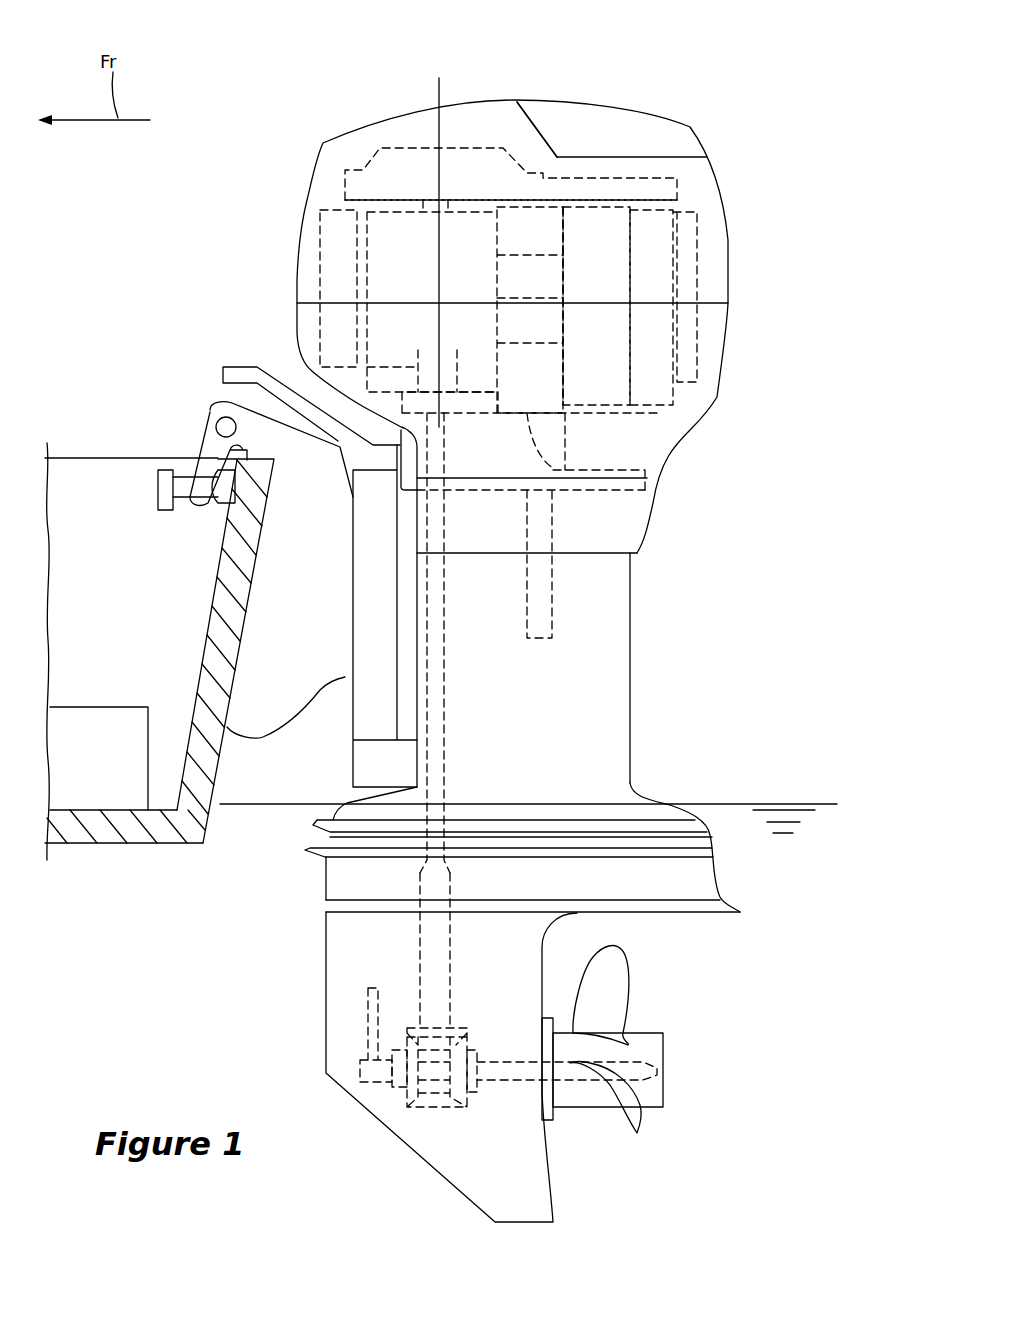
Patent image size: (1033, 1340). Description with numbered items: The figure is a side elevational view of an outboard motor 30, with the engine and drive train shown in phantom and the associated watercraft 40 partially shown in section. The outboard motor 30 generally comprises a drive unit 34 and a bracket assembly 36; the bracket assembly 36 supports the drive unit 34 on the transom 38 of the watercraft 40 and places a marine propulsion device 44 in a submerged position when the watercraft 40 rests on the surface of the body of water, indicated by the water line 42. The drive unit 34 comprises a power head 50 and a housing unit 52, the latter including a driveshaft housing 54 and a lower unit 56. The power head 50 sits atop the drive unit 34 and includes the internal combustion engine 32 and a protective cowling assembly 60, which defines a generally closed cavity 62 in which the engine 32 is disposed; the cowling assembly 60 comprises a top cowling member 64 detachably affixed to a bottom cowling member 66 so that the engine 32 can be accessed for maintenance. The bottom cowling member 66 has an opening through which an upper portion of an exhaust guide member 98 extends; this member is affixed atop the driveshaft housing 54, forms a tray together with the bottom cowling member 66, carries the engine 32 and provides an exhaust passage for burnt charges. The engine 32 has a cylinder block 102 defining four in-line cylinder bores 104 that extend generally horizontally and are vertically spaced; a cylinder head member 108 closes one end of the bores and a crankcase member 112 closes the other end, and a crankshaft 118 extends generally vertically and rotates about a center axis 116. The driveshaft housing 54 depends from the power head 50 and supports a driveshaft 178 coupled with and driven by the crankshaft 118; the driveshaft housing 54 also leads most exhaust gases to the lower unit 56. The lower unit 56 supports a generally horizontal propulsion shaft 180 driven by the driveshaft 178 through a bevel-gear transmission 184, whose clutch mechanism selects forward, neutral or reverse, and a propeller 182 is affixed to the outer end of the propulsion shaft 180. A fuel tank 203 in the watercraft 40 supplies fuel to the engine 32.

The outboard motor 30 is at (527, 614).
The internal combustion engine 32 is at (508, 450).
The drive unit 34 is at (595, 727).
The bracket assembly 36 is at (213, 651).
The transom 38 is at (210, 637).
The watercraft 40 is at (132, 706).
The water line 42 is at (528, 781).
The marine propulsion device 44 is at (546, 1067).
The power head 50 is at (507, 450).
The housing unit 52 is at (568, 605).
The driveshaft housing 54 is at (522, 826).
The lower unit 56 is at (415, 1067).
The protective cowling assembly 60 is at (449, 326).
The closed cavity 62 is at (465, 156).
The top cowling member 64 is at (473, 201).
The bottom cowling member 66 is at (473, 426).
The exhaust guide member 98 is at (590, 472).
The cylinder block 102 is at (574, 120).
The cylinder bores 104 is at (682, 306).
The cylinder head member 108 is at (660, 449).
The crankcase member 112 is at (433, 222).
The center axis 116 is at (484, 227).
The crankshaft 118 is at (287, 565).
The driveshaft 178 is at (491, 855).
The propulsion shaft 180 is at (566, 1033).
The propeller 182 is at (602, 1078).
The transmission 184 is at (443, 1097).
The fuel tank 203 is at (132, 875).